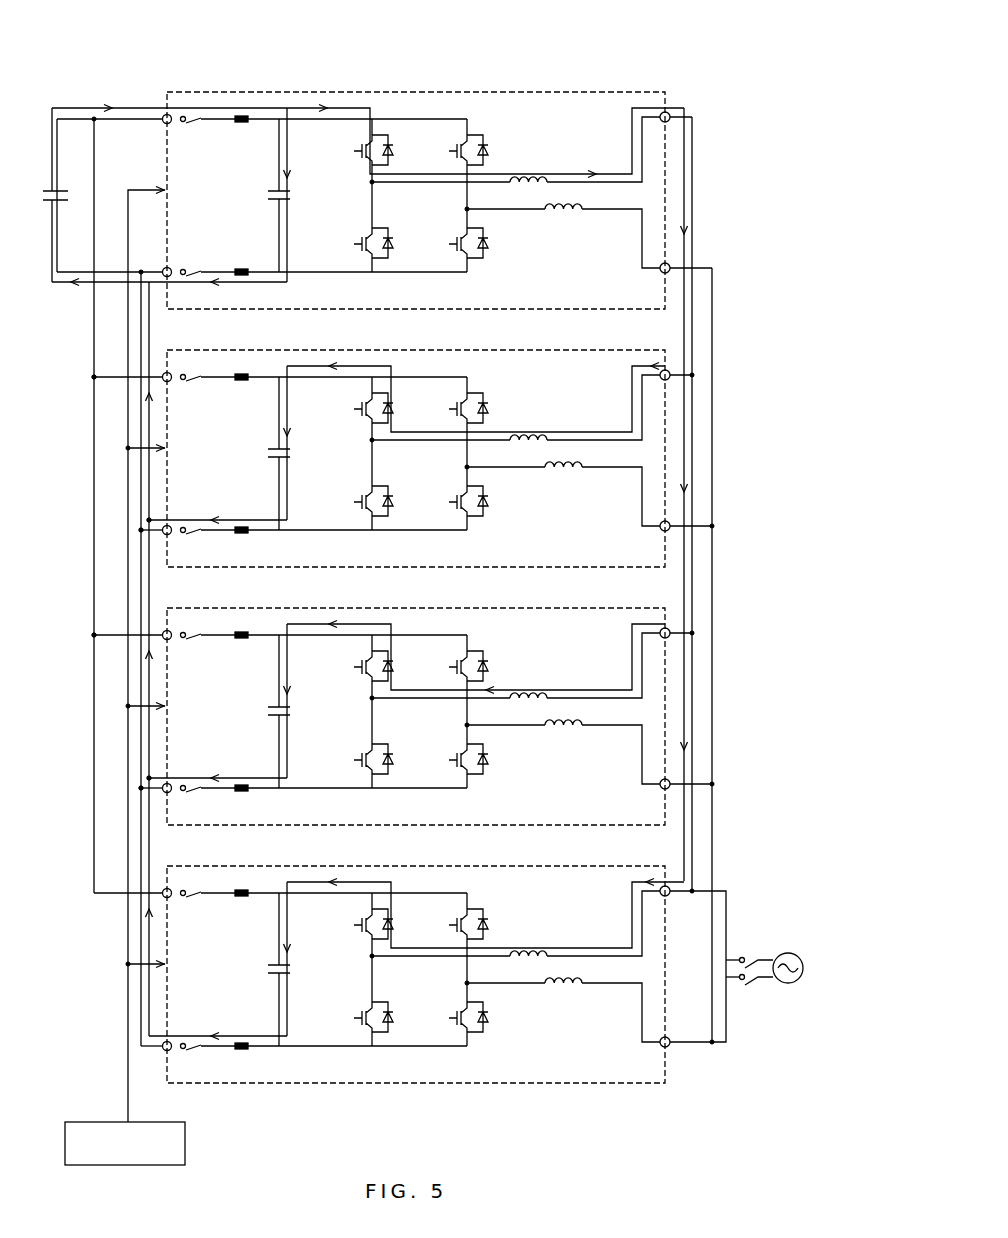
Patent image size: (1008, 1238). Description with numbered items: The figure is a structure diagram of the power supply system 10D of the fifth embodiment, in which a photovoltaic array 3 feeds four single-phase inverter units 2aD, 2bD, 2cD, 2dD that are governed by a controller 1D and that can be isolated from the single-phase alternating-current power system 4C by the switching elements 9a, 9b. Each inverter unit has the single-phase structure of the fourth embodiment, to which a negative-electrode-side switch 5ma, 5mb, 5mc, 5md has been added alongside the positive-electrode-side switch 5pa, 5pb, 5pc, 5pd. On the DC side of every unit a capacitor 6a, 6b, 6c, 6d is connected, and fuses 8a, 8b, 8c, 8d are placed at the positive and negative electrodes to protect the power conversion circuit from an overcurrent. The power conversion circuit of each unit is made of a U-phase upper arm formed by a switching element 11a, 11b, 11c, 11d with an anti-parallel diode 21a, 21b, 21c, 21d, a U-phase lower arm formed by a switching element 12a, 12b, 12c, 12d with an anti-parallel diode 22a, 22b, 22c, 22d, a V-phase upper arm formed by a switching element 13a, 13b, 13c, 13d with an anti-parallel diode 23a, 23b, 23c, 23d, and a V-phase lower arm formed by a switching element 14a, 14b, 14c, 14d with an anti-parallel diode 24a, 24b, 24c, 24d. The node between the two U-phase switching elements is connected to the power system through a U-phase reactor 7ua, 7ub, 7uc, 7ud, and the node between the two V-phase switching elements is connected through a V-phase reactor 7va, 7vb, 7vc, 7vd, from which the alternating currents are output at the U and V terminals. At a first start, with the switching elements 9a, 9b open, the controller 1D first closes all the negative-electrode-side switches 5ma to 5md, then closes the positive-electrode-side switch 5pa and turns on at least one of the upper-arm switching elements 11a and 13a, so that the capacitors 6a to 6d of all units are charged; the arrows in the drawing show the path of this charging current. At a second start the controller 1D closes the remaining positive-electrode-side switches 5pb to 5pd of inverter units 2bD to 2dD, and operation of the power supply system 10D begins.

The power supply system 10D is at (740, 62).
The controller 1D is at (125, 1167).
The photovoltaic (PV) array 3 is at (52, 185).
The single-phase alternating-current power system 4C is at (784, 953).
The switching element 9a is at (747, 958).
The switching element 9b is at (747, 988).
The inverter unit 2aD is at (555, 92).
The inverter unit 2bD is at (416, 444).
The inverter unit 2cD is at (416, 702).
The inverter unit 2dD is at (416, 960).
The positive-electrode-side switch 5pa is at (188, 124).
The positive-electrode-side switch 5pb is at (164, 398).
The positive-electrode-side switch 5pc is at (164, 656).
The positive-electrode-side switch 5pd is at (164, 914).
The negative-electrode-side switch 5ma is at (190, 271).
The negative-electrode-side switch 5mb is at (188, 547).
The negative-electrode-side switch 5mc is at (188, 805).
The negative-electrode-side switch 5md is at (188, 1063).
The capacitor 6a is at (267, 195).
The capacitor 6b is at (256, 453).
The capacitor 6c is at (256, 711).
The capacitor 6d is at (256, 969).
The U-phase reactor 7ua is at (528, 181).
The U-phase reactor 7ub is at (547, 413).
The U-phase reactor 7uc is at (546, 671).
The U-phase reactor 7ud is at (547, 929).
The V-phase reactor 7va is at (566, 212).
The V-phase reactor 7vb is at (576, 488).
The V-phase reactor 7vc is at (575, 746).
The V-phase reactor 7vd is at (576, 1004).
The fuse 8a is at (241, 114).
The fuse 8b is at (255, 447).
The fuse 8c is at (255, 705).
The fuse 8d is at (255, 963).
The switching element 11a is at (360, 151).
The switching element 11b is at (339, 408).
The switching element 11c is at (339, 666).
The switching element 11d is at (339, 924).
The switching element 12a is at (360, 244).
The switching element 12b is at (339, 501).
The switching element 12c is at (339, 759).
The switching element 12d is at (339, 1017).
The switching element 13a is at (466, 136).
The switching element 13b is at (465, 375).
The switching element 13c is at (464, 633).
The switching element 13d is at (465, 891).
The switching element 14a is at (473, 256).
The switching element 14b is at (485, 513).
The switching element 14c is at (484, 771).
The switching element 14d is at (485, 1029).
The anti-parallel diode 21a is at (390, 148).
The anti-parallel diode 21b is at (379, 375).
The anti-parallel diode 21c is at (378, 633).
The anti-parallel diode 21d is at (379, 891).
The anti-parallel diode 22a is at (390, 262).
The anti-parallel diode 22b is at (385, 527).
The anti-parallel diode 22c is at (384, 785).
The anti-parallel diode 22d is at (385, 1043).
The anti-parallel diode 23a is at (492, 146).
The anti-parallel diode 23b is at (504, 405).
The anti-parallel diode 23c is at (503, 663).
The anti-parallel diode 23d is at (504, 921).
The anti-parallel diode 24a is at (490, 243).
The anti-parallel diode 24b is at (509, 501).
The anti-parallel diode 24c is at (508, 759).
The anti-parallel diode 24d is at (509, 1017).